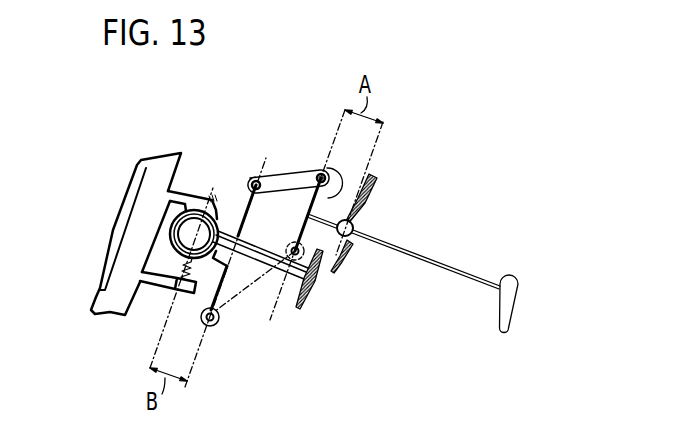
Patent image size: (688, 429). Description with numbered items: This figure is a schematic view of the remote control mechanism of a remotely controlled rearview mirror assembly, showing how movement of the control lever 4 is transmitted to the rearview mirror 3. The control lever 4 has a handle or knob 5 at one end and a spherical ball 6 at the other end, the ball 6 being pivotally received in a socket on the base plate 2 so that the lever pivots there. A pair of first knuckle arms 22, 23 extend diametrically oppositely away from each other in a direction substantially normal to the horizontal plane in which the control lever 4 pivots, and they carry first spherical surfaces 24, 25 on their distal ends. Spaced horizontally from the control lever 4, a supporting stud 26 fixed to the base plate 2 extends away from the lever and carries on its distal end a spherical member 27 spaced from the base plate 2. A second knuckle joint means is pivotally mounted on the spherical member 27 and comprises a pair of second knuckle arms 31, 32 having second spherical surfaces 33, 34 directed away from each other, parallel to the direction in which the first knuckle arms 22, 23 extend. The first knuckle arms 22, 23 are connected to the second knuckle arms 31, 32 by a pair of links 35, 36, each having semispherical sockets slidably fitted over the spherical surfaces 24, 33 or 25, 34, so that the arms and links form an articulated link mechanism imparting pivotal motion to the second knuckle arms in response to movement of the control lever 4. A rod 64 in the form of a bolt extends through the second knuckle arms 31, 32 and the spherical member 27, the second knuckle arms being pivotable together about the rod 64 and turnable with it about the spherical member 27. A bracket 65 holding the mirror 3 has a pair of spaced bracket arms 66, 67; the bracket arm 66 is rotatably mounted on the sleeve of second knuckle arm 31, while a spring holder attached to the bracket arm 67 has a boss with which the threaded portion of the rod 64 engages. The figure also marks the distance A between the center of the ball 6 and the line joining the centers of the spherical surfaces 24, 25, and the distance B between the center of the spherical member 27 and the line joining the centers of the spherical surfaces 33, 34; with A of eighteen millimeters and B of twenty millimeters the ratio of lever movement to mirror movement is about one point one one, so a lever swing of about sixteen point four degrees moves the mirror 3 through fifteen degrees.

The base plate 2 is at (375, 182).
The rearview mirror 3 is at (110, 245).
The control lever 4 is at (443, 262).
The handle or knob 5 is at (512, 303).
The spherical ball 6 is at (353, 227).
The first knuckle arm 22 is at (339, 171).
The first knuckle arm 23 is at (306, 218).
The first spherical surface 24 is at (321, 171).
The first spherical surface 25 is at (293, 262).
The supporting stud 26 is at (287, 248).
The spherical member 27 is at (184, 222).
The second knuckle arm 31 is at (228, 216).
The second knuckle arm 32 is at (224, 283).
The second spherical surface 33 is at (255, 176).
The second spherical surface 34 is at (212, 327).
The link 35 is at (282, 169).
The link 36 is at (252, 290).
The rod 64 is at (213, 196).
The bracket 65 is at (157, 153).
The bracket arm 66 is at (192, 194).
The bracket arm 67 is at (144, 282).